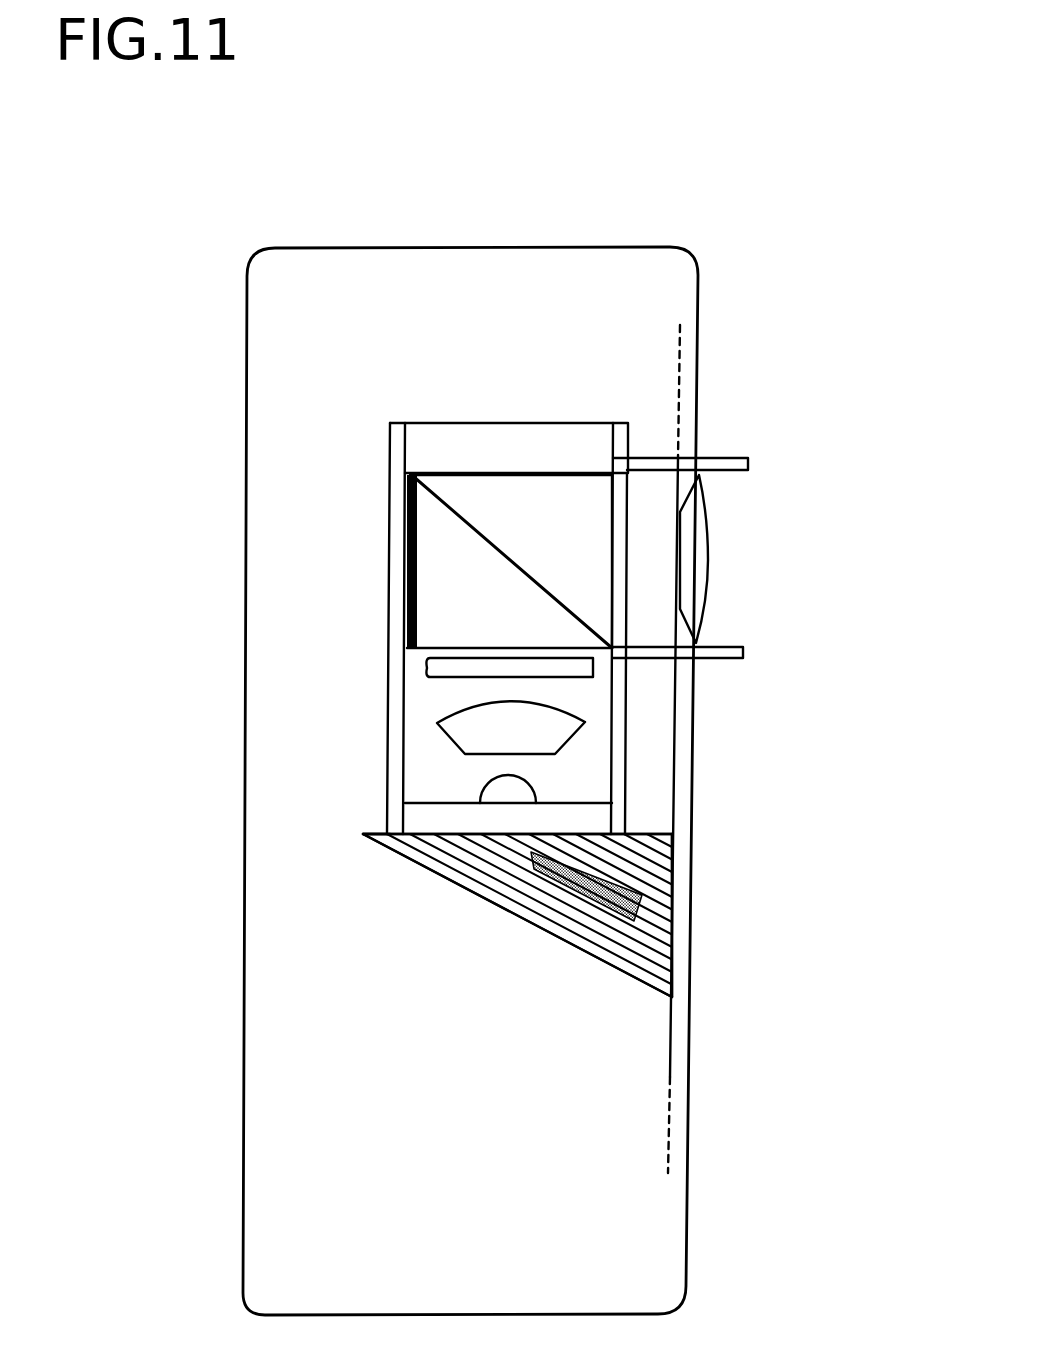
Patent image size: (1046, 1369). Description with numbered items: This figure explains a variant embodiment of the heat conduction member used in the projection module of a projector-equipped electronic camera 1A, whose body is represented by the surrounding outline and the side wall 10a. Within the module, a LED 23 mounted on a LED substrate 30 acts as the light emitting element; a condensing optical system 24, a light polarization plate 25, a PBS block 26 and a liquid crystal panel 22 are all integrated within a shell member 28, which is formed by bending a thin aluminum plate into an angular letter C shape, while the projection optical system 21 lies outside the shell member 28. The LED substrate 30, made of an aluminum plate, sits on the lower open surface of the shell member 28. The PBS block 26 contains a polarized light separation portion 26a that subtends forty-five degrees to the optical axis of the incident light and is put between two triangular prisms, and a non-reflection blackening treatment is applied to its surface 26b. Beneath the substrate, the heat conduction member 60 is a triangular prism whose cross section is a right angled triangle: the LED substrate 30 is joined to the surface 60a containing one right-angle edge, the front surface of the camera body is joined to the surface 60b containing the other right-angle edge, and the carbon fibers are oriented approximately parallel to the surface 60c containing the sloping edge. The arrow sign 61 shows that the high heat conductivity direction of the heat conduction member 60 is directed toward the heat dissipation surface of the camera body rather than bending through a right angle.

The projector-equipped electronic camera 1A is at (740, 197).
The side wall of housing 10a is at (690, 1030).
The projection optical system 21 is at (698, 555).
The liquid crystal panel 22 is at (500, 448).
The LED 23 is at (503, 788).
The condensing optical system 24 is at (472, 723).
The light polarization plate 25 is at (575, 666).
The PBS block 26 is at (585, 492).
The polarized light separation portion 26a is at (405, 545).
The surface of PBS block 26b is at (405, 598).
The shell member 28 is at (395, 469).
The LED substrate 30 is at (595, 822).
The heat conduction member 60 is at (470, 886).
The surface containing one right-angle edge 60a is at (363, 836).
The surface containing other right-angle edge 60b is at (673, 898).
The surface containing sloping edge 60c is at (492, 900).
The arrow sign 61 is at (587, 887).